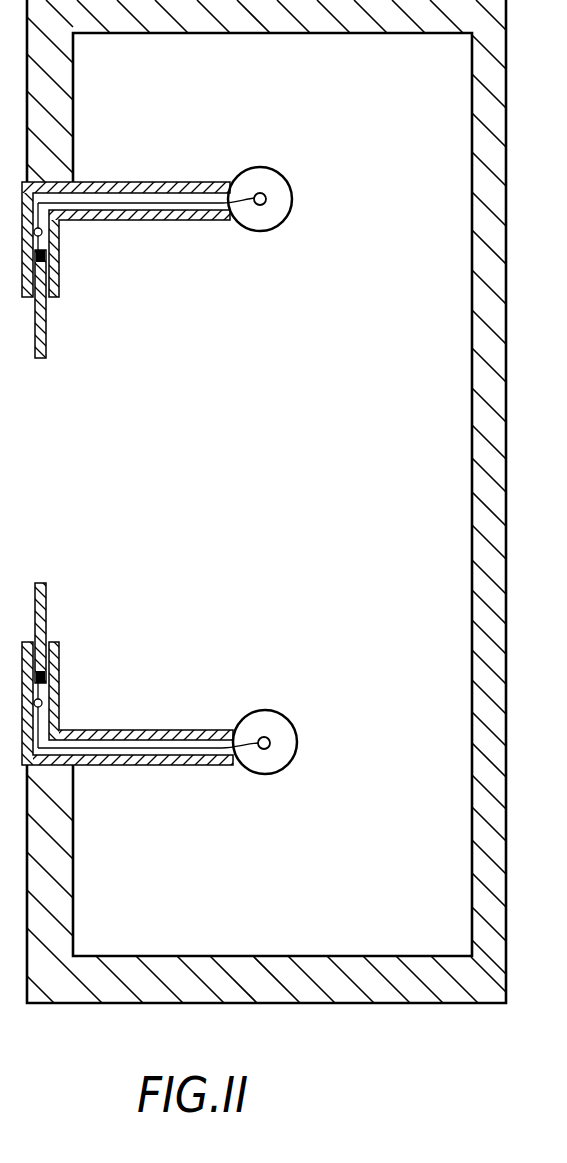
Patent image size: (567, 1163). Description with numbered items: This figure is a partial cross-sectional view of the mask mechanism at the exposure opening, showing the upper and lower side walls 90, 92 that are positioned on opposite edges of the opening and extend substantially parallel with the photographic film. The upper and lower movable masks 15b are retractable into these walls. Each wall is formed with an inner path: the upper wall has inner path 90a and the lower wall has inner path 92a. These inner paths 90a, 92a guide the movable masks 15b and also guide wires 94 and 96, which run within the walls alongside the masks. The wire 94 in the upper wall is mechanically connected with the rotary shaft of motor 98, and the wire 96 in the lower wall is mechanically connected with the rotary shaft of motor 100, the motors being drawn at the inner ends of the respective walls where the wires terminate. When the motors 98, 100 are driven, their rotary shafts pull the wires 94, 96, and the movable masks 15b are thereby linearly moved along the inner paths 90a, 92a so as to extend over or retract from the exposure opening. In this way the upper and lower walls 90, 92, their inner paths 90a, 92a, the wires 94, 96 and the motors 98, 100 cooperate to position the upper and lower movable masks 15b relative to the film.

The upper side wall 90 is at (113, 182).
The inner path 90a is at (133, 221).
The wire 94 is at (198, 197).
The motor 98 is at (282, 202).
The upper and lower movable masks 15b is at (46, 333).
The lower side wall 92 is at (227, 765).
The inner path 92a is at (117, 757).
The wire 96 is at (193, 748).
The motor 100 is at (287, 732).